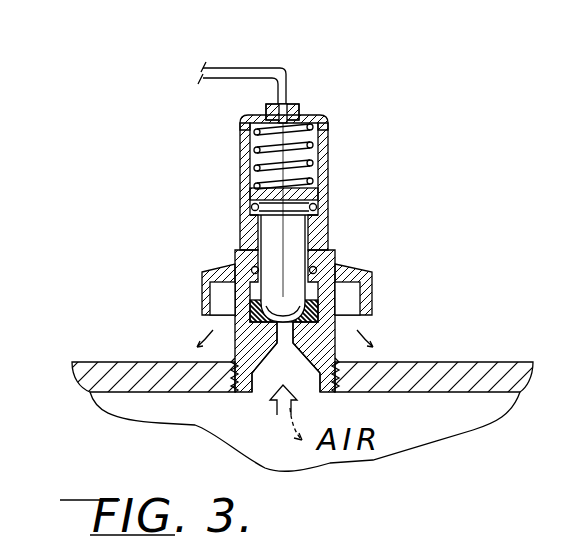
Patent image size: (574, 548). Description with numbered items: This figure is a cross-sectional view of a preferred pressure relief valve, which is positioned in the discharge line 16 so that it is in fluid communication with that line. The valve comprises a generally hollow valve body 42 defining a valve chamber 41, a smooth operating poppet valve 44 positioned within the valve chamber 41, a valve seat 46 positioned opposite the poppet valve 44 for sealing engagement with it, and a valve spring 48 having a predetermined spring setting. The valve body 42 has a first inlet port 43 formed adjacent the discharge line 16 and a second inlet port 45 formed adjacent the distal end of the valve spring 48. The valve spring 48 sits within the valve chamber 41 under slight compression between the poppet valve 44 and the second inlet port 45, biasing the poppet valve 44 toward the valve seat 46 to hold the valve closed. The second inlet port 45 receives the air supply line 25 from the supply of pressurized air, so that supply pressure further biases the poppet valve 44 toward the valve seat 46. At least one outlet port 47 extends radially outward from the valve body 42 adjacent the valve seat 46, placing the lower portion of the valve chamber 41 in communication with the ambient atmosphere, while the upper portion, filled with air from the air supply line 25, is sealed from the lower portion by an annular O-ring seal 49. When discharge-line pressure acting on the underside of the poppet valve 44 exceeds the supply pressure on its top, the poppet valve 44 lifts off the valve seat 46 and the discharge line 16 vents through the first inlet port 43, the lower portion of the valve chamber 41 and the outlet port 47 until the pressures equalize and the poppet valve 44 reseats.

The discharge line 16 is at (450, 415).
The air supply line 25 is at (237, 66).
The valve chamber 41 is at (245, 243).
The valve body 42 is at (240, 165).
The first inlet port 43 is at (278, 360).
The poppet valve 44 is at (302, 245).
The second inlet port 45 is at (300, 108).
The valve seat 46 is at (236, 318).
The outlet port 47 is at (243, 292).
The valve spring 48 is at (318, 150).
The annular O-ring seal 49 is at (316, 271).